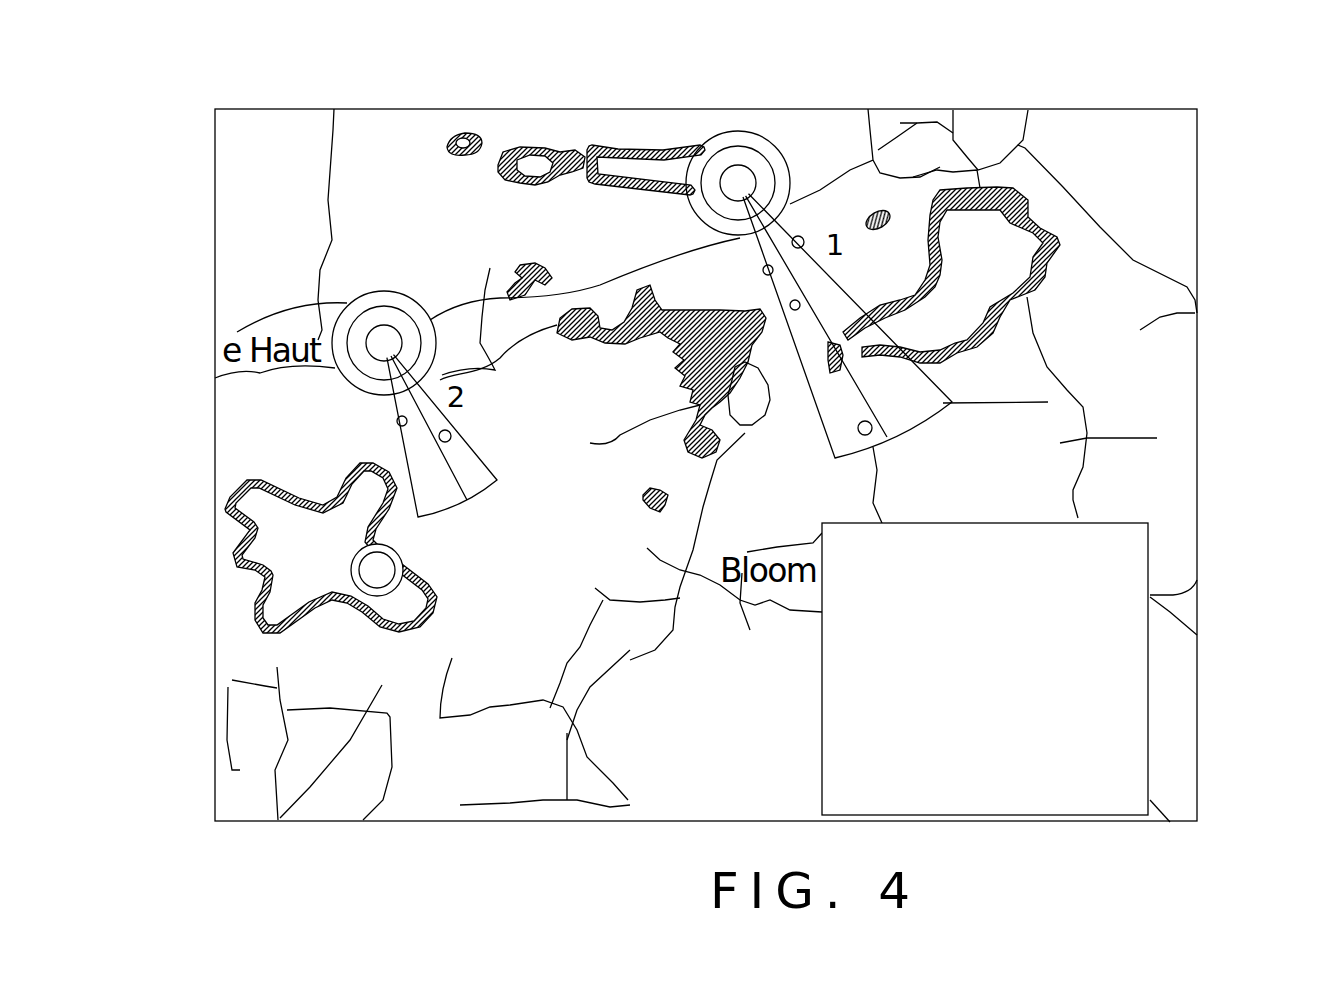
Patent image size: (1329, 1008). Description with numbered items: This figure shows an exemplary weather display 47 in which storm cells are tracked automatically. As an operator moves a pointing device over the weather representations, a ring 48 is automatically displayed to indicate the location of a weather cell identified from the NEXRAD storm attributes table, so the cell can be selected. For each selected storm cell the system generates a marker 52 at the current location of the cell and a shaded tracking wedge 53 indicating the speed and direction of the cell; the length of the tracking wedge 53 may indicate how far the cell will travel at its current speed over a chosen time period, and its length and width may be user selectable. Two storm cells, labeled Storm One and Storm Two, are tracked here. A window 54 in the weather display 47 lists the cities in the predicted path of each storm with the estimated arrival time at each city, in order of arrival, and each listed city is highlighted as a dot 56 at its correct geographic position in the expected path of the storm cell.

The weather display 47 is at (1197, 497).
The ring 48 is at (352, 572).
The marker 52 is at (745, 130).
The tracking wedge 53 is at (788, 205).
The window 54 is at (1150, 578).
The dot 56 is at (805, 236).